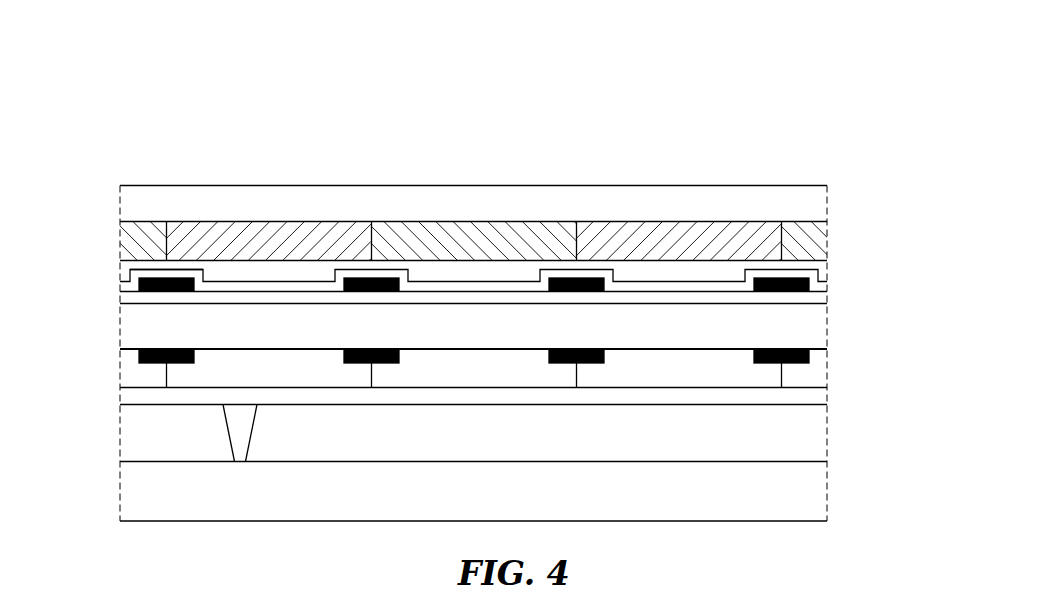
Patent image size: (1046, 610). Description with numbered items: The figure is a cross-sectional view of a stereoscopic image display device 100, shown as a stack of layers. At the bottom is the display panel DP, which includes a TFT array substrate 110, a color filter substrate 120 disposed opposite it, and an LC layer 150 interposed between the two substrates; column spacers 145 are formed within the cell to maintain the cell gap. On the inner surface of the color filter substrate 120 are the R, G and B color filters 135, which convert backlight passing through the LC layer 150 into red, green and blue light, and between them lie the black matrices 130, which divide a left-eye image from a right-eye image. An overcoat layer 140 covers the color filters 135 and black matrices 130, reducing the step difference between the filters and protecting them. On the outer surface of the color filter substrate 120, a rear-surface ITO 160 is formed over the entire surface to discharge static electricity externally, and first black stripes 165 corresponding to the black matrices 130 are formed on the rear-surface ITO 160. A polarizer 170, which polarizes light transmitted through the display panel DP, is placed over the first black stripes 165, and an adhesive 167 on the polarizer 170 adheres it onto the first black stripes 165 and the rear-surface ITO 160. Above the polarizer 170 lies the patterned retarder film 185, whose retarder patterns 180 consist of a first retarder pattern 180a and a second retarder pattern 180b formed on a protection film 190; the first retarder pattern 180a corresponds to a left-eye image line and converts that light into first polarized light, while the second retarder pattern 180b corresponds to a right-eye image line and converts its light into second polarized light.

The stereoscopic image display device 100 is at (285, 114).
The TFT array substrate 110 is at (820, 492).
The color filter substrate 120 is at (820, 322).
The black matrices 130 is at (140, 354).
The color filters 135 is at (820, 367).
The overcoat layer 140 is at (820, 393).
The column spacers 145 is at (235, 425).
The LC layer 150 is at (820, 433).
The rear-surface ITO 160 is at (130, 298).
The first black stripes 165 is at (136, 283).
The adhesive 167 is at (142, 273).
The polarizer 170 is at (817, 275).
The retarder patterns 180 is at (513, 125).
The first retarder pattern 180a is at (501, 226).
The second retarder pattern 180b is at (686, 224).
The patterned retarder film 185 is at (772, 78).
The protection film 190 is at (772, 200).
The display panel DP is at (918, 329).